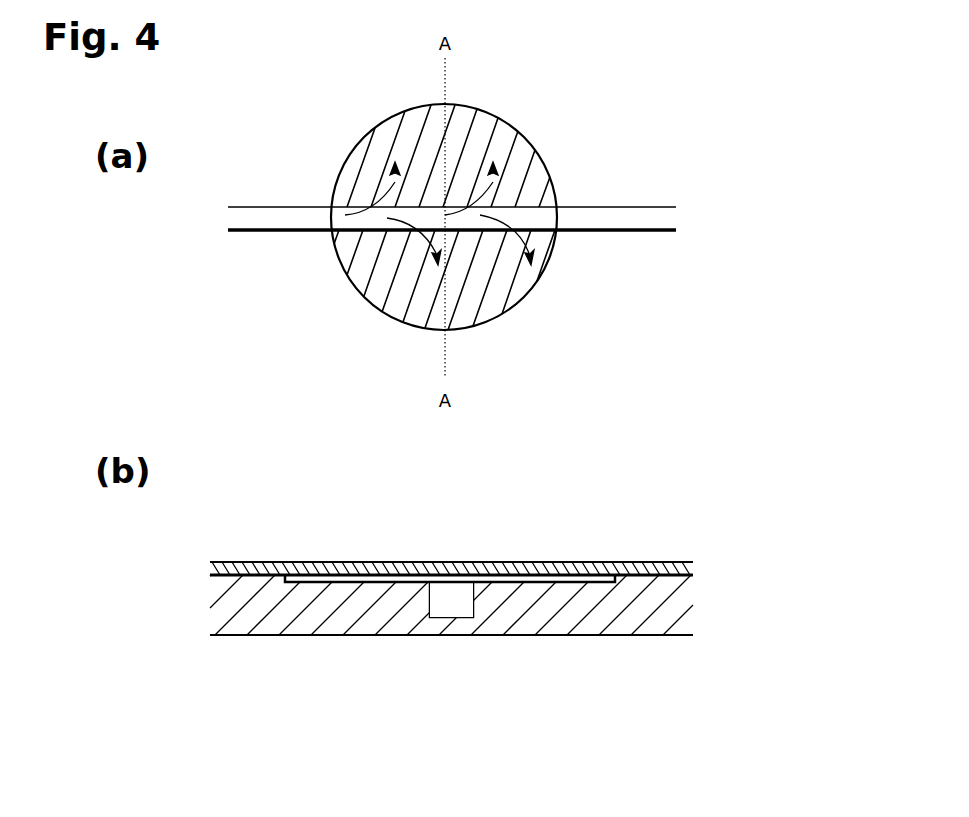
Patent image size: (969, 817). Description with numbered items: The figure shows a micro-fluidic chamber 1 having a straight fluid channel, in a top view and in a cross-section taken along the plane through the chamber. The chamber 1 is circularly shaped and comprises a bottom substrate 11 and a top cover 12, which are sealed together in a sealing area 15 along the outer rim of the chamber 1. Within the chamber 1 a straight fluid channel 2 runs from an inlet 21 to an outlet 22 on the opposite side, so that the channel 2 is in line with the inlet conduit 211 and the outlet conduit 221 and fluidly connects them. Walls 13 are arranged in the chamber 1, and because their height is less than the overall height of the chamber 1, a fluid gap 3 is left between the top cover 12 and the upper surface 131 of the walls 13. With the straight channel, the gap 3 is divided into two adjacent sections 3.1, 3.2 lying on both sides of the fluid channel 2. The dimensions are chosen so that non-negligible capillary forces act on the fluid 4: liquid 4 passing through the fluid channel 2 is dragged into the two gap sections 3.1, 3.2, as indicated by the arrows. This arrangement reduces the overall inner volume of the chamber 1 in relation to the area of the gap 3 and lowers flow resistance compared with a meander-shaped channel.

The micro-fluidic chamber 1 is at (565, 137).
The fluid channel 2 is at (338, 266).
The fluid gap 3 is at (405, 148).
The first adjacent section of the gap 3.1 is at (407, 287).
The second adjacent section of the gap 3.2 is at (498, 132).
The fluid 4 is at (439, 213).
The bottom substrate 11 is at (650, 630).
The top cover 12 is at (363, 562).
The walls 13 is at (467, 127).
The sealing area 15 is at (253, 563).
The inlet 21 is at (327, 216).
The outlet 22 is at (560, 214).
The upper surface of the walls 131 is at (417, 580).
The inlet conduit 211 is at (262, 216).
The outlet conduit 221 is at (622, 222).